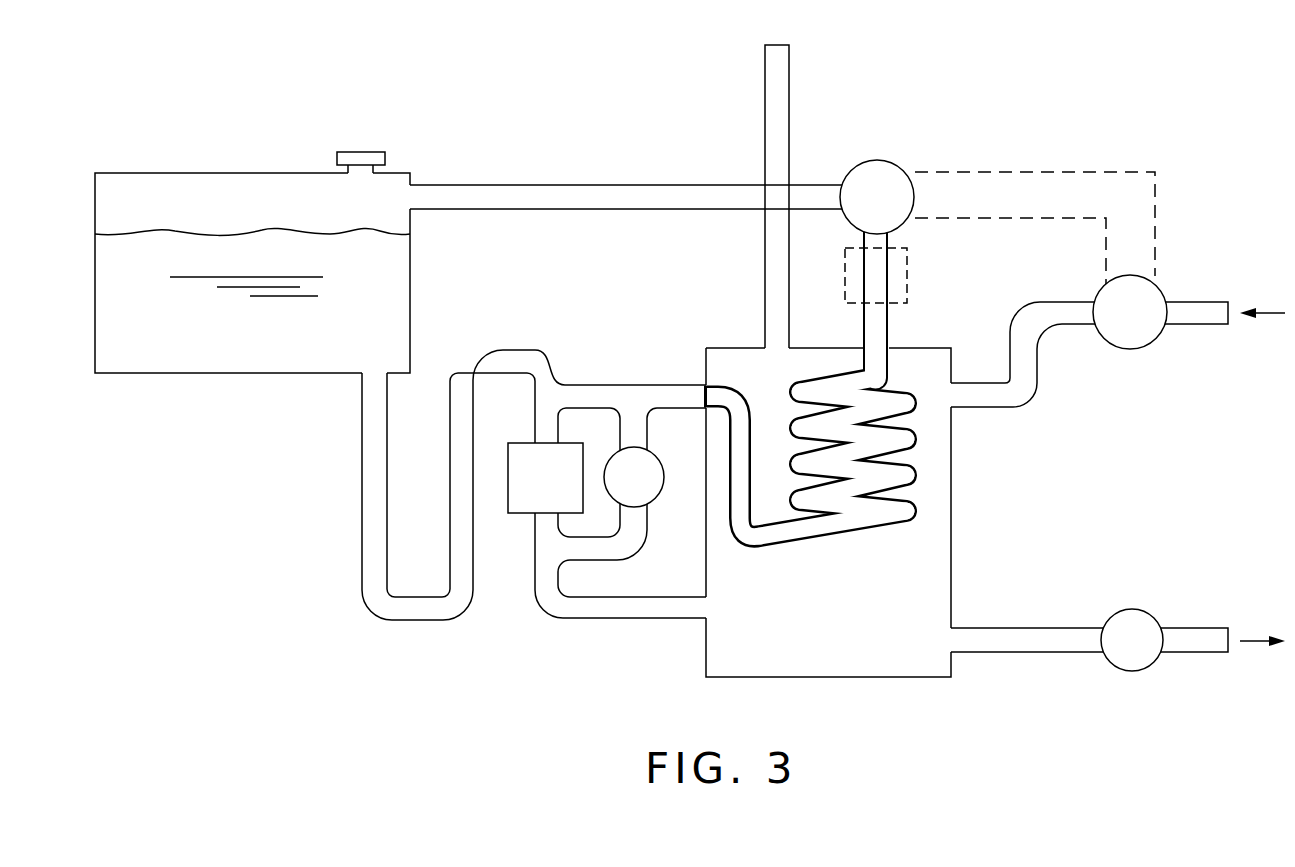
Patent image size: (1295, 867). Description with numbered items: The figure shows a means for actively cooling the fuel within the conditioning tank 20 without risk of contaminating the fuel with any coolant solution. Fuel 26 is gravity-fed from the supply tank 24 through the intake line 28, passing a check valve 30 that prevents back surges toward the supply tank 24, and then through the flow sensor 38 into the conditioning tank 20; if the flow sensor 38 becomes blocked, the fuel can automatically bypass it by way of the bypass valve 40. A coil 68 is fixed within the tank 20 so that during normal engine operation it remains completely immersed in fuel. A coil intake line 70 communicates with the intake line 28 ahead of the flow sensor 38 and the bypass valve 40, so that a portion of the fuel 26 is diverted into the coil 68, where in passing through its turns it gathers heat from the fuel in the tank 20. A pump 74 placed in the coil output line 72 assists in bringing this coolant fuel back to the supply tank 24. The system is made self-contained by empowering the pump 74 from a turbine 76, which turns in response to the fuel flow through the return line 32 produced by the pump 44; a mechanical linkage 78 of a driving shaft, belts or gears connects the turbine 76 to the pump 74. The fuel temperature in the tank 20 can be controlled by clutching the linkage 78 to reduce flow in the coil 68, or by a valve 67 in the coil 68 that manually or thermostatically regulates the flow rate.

The conditioning tank 20 is at (823, 688).
The supply tank 24 is at (262, 373).
The fuel 26 is at (203, 328).
The intake line 28 is at (522, 325).
The check valve 30 is at (1045, 653).
The return line 32 is at (1200, 325).
The flow sensor 38 is at (521, 514).
The bypass valve 40 is at (648, 500).
The pump 44 is at (1137, 670).
The valve 67 is at (909, 249).
The coil 68 is at (918, 512).
The coil intake line 70 is at (657, 383).
The coil output line 72 is at (641, 185).
The pump 74 is at (898, 167).
The turbine 76 is at (1162, 293).
The mechanical linkage 78 is at (1077, 172).